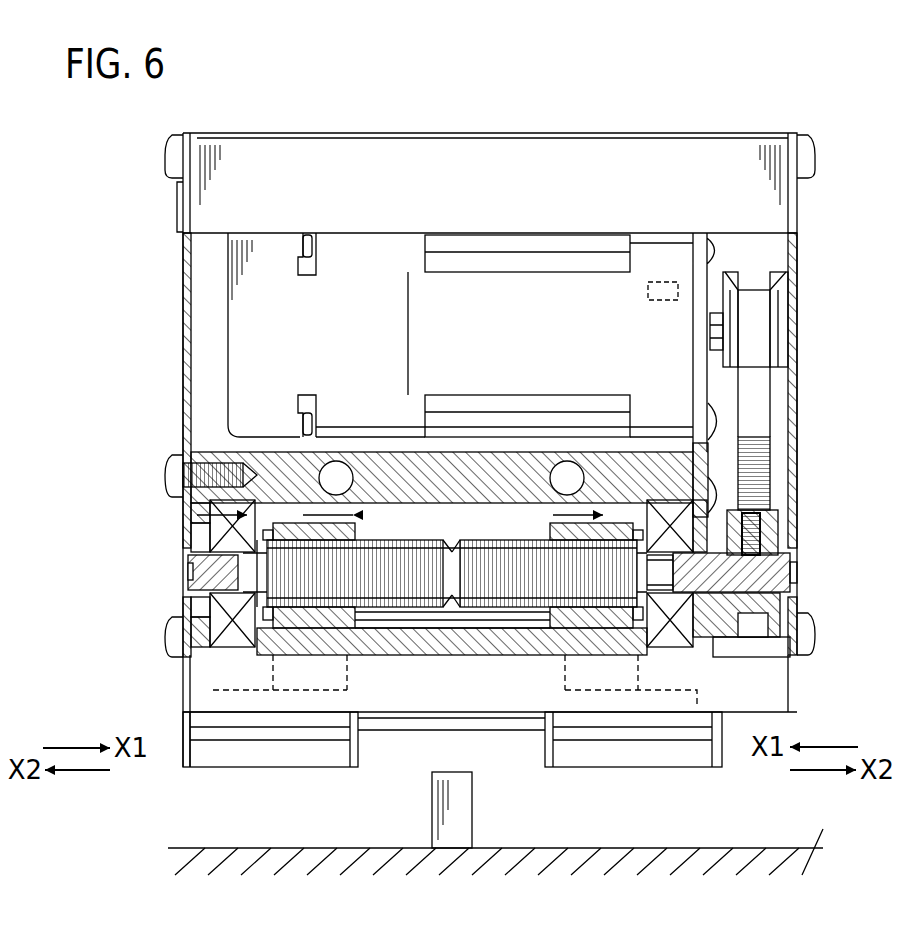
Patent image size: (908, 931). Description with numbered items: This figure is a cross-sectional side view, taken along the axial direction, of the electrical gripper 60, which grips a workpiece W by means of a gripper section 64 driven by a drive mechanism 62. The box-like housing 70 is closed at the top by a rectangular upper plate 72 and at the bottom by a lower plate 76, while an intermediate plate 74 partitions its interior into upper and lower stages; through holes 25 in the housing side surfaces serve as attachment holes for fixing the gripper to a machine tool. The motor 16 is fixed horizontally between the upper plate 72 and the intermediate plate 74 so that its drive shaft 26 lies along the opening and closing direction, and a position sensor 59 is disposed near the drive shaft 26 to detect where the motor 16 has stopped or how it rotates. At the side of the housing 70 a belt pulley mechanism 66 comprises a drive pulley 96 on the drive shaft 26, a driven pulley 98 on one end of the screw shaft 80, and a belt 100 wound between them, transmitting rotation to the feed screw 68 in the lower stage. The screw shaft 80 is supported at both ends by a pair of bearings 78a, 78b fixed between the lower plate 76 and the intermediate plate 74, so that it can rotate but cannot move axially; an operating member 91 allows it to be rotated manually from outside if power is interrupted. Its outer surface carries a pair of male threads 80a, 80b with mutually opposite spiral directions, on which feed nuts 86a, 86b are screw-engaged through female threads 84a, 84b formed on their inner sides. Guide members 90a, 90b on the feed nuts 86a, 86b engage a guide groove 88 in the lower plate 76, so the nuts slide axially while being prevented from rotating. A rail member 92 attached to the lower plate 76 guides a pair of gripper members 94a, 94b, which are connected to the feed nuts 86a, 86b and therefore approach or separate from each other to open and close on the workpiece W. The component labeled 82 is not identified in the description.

The electrical gripper 60 is at (869, 148).
The upper plate 72 is at (528, 150).
The housing 70 is at (797, 262).
The motor 16 is at (226, 328).
The feed screw 68 is at (368, 531).
The position sensor 59 is at (646, 292).
The drive shaft 26 is at (720, 336).
The drive pulley 96 is at (790, 330).
The belt 100 is at (755, 431).
The belt pulley mechanism 66 is at (775, 480).
The intermediate plate 74 is at (395, 470).
The through holes 25 is at (336, 478).
The screw shaft 80 is at (422, 609).
The male thread 80a is at (385, 533).
The male thread 80b is at (550, 536).
The feed nut 86a is at (290, 520).
The feed nut 86b is at (605, 522).
The guide member 90a is at (290, 624).
The guide member 90b is at (625, 620).
The shaft middle portion 82 is at (450, 610).
The guide groove 88 is at (502, 610).
The lower plate 76 is at (420, 654).
The bearing 78a is at (227, 637).
The bearing 78b is at (680, 638).
The operating member 91 is at (190, 574).
The driven pulley 98 is at (775, 610).
The drive mechanism 62 is at (261, 660).
The gripper section 64 is at (684, 773).
The gripper member 94a is at (305, 752).
The gripper member 94b is at (590, 752).
The rail member 92 is at (490, 724).
The female thread 84a is at (330, 652).
The female thread 84b is at (610, 652).
The workpiece W is at (455, 798).